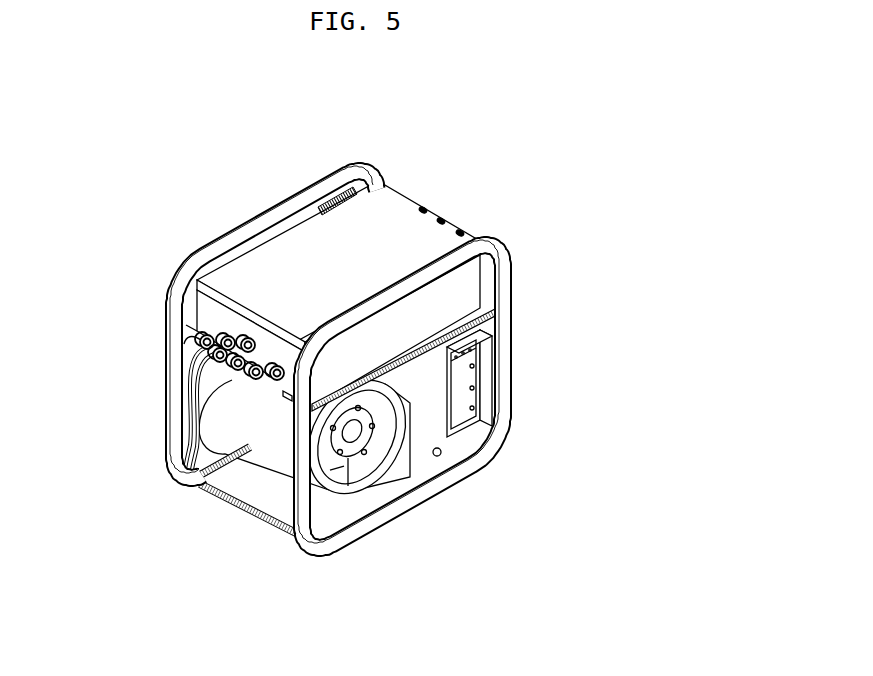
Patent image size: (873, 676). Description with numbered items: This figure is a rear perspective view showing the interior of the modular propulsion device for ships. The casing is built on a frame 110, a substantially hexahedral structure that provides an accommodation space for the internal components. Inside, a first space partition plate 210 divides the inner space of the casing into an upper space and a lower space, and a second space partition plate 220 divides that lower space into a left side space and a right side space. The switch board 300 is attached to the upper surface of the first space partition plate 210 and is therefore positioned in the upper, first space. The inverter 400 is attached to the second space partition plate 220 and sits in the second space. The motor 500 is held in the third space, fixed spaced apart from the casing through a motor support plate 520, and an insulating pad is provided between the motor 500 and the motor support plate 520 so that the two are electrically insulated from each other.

The frame 110 is at (277, 203).
The first space partition plate 210 is at (484, 321).
The second space partition plate 220 is at (433, 398).
The switch board 300 is at (410, 227).
The inverter 400 is at (463, 390).
The motor 500 is at (227, 412).
The motor support plate 520 is at (327, 503).